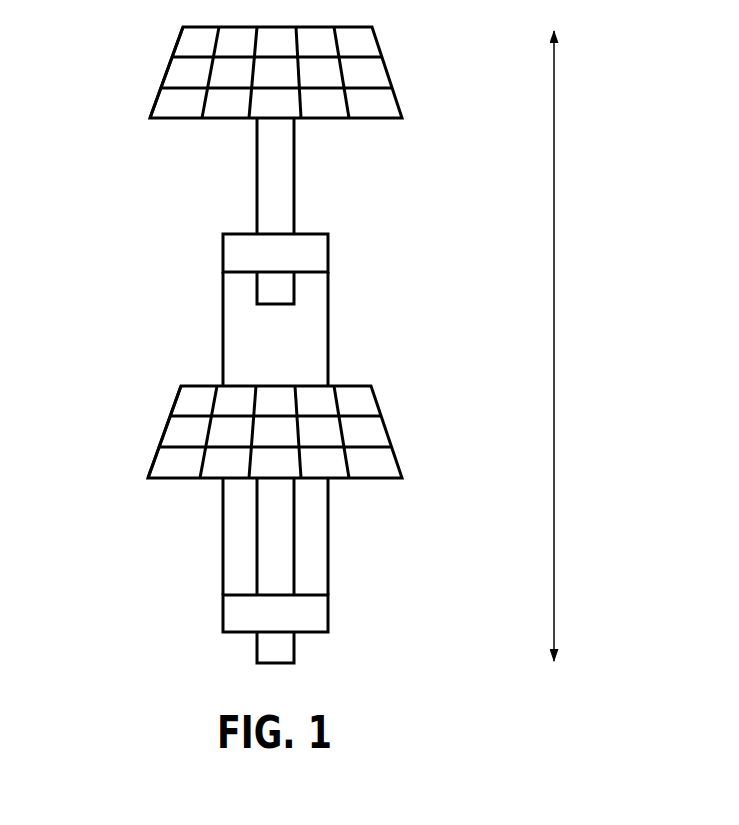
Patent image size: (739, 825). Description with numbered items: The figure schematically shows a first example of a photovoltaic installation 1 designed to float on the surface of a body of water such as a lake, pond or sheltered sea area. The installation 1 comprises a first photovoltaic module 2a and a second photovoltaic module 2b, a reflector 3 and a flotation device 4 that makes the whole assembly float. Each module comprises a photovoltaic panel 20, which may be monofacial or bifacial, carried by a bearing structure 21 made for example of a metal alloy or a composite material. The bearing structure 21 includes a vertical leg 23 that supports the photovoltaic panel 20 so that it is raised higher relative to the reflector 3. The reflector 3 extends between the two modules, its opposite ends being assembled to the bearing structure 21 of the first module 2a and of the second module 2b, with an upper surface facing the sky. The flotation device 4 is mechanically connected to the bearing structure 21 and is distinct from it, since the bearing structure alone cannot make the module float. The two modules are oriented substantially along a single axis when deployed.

The photovoltaic installation 1 is at (603, 128).
The first photovoltaic module 2a is at (398, 70).
The second photovoltaic module 2b is at (397, 423).
The reflector 3 is at (331, 327).
The flotation device 4 is at (255, 290).
The photovoltaic panel 20 is at (158, 73).
The bearing structure 21 is at (330, 252).
The leg 23 is at (297, 170).